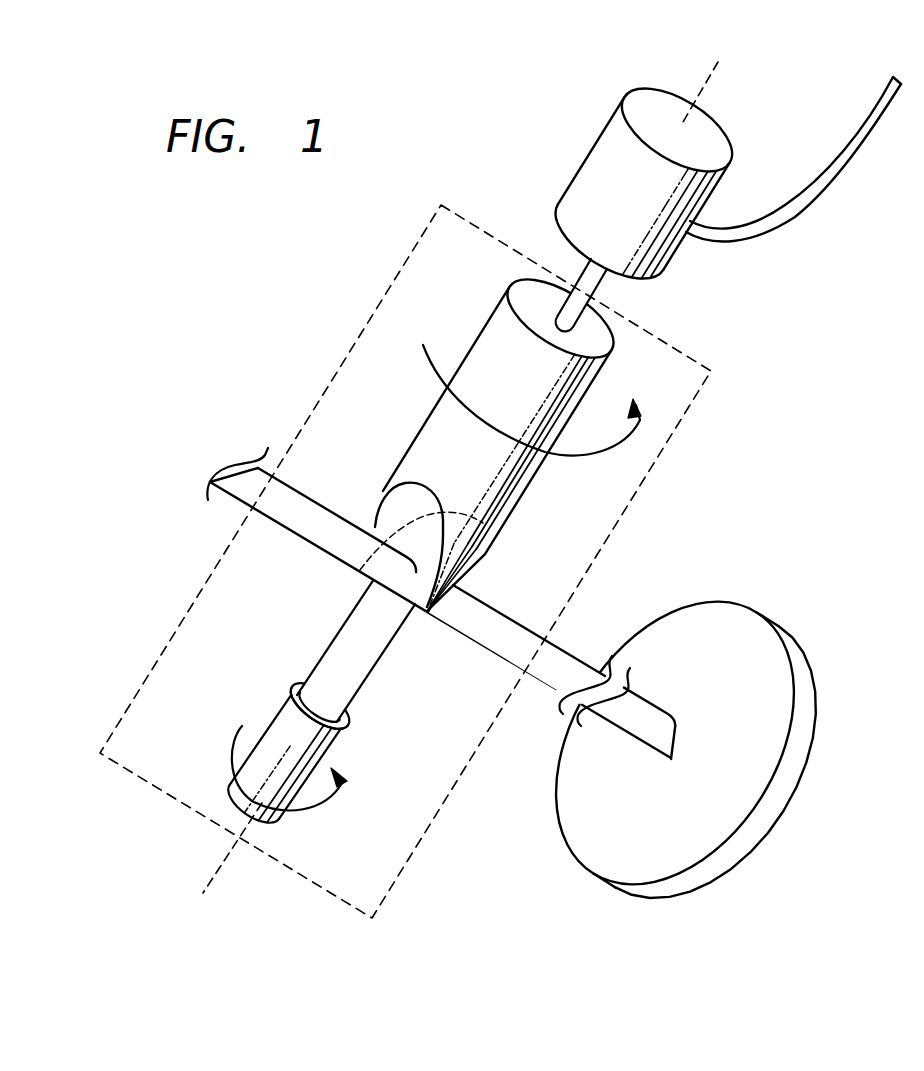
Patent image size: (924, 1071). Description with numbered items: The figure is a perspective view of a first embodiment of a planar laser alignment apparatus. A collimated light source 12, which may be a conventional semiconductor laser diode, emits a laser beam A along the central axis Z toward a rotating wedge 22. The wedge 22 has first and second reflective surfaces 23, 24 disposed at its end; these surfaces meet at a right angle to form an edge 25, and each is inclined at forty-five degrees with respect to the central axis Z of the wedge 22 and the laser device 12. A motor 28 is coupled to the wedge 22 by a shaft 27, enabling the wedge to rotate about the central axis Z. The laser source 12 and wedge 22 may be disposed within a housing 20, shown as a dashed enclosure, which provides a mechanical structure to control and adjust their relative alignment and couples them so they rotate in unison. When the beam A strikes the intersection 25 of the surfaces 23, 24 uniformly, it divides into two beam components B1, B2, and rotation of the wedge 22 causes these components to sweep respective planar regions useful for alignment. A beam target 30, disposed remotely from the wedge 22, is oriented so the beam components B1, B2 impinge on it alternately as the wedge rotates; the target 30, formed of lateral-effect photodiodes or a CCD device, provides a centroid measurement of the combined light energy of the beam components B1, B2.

The collimated light source 12 is at (283, 745).
The housing 20 is at (307, 369).
The rotating wedge 22 is at (500, 350).
The first reflective surface 23 is at (482, 574).
The second reflective surface 24 is at (405, 488).
The edge 25 is at (416, 572).
The shaft 27 is at (593, 282).
The motor 28 is at (617, 158).
The beam target 30 is at (708, 815).
The laser beam A is at (347, 653).
The beam component B1 is at (625, 707).
The beam component B2 is at (323, 527).
The central axis Z is at (703, 87).